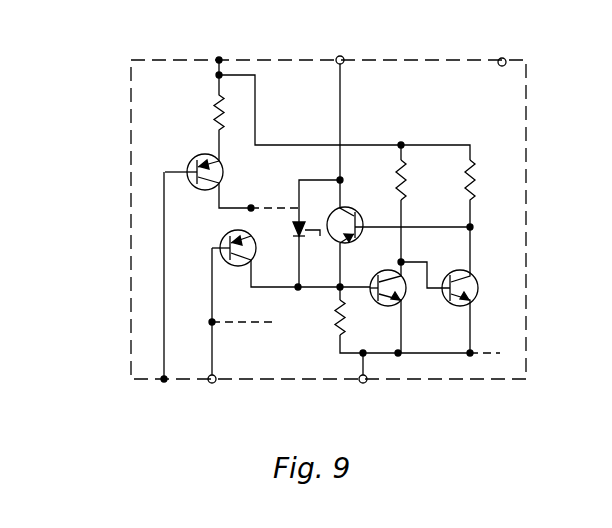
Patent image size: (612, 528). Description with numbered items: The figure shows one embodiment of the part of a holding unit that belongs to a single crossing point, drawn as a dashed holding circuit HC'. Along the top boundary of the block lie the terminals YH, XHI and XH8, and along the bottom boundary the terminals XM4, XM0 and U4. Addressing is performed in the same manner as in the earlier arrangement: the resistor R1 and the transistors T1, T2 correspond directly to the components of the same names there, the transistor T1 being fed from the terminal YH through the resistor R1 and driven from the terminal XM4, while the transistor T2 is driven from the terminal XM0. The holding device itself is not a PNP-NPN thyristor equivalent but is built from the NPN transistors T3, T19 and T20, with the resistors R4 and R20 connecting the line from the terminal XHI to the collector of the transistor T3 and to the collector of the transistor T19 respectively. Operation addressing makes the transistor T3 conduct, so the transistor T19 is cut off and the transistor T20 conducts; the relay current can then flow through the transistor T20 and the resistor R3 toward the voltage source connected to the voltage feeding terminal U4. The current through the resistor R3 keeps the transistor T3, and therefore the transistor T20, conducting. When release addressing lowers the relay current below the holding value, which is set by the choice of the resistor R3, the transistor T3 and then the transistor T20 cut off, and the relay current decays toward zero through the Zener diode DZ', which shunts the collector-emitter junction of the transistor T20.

The holding circuit HC' is at (285, 219).
The supply terminal YH is at (218, 56).
The addressing terminal XHI is at (347, 50).
The terminal XH8 is at (508, 52).
The addressing terminal XM4 is at (163, 383).
The addressing terminal XM0 is at (212, 383).
The voltage feeding terminal U4 is at (363, 383).
The resistor R1 is at (212, 111).
The transistor T1 is at (196, 190).
The transistor T2 is at (224, 241).
The Zener diode DZ' is at (311, 214).
The transistor T20 is at (358, 209).
The resistor R4 is at (404, 185).
The resistor R20 is at (474, 185).
The transistor T3 is at (404, 306).
The transistor T19 is at (478, 306).
The resistor R3 is at (335, 322).